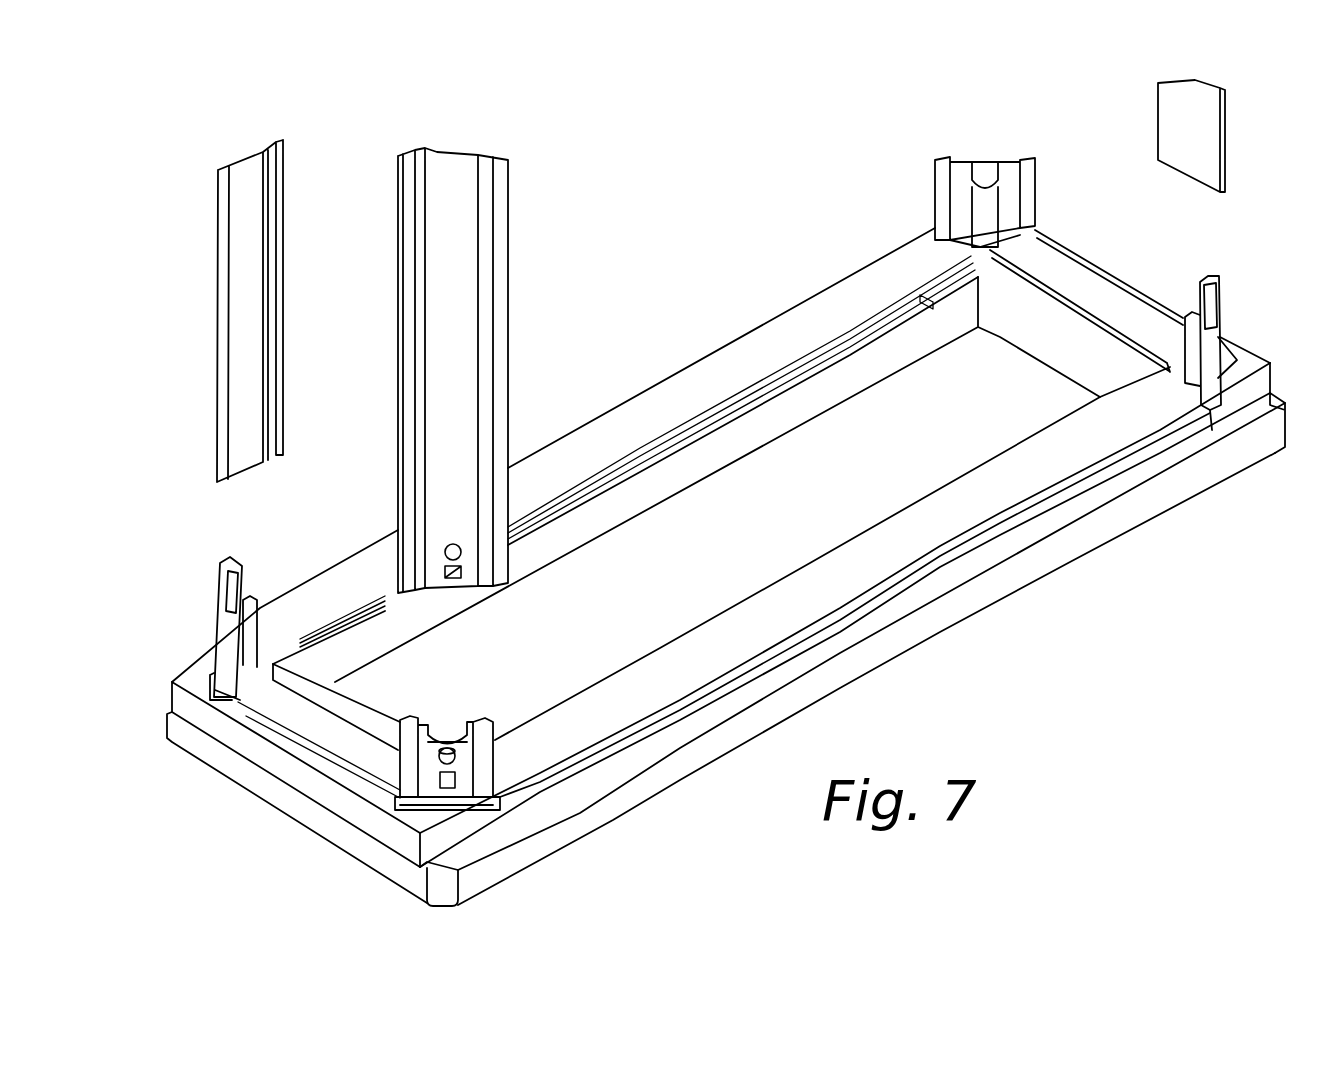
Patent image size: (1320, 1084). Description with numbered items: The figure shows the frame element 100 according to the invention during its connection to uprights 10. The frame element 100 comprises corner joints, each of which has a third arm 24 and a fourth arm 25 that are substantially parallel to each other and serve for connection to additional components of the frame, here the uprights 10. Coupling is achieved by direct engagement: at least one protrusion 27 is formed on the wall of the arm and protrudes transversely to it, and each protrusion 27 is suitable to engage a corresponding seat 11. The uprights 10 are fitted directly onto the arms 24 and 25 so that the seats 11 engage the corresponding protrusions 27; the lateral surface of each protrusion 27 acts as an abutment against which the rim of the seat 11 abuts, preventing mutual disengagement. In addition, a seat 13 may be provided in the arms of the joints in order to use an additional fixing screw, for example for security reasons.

The frame element 100 is at (683, 320).
The upright 10 is at (530, 290).
The seat 11 is at (453, 580).
The seat 13 is at (497, 727).
The third arm 24 is at (447, 745).
The fourth arm 25 is at (233, 562).
The protrusion 27 is at (500, 770).